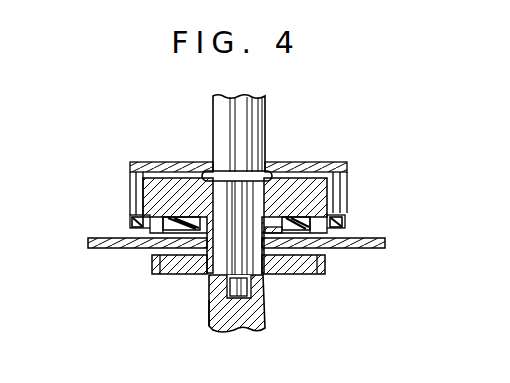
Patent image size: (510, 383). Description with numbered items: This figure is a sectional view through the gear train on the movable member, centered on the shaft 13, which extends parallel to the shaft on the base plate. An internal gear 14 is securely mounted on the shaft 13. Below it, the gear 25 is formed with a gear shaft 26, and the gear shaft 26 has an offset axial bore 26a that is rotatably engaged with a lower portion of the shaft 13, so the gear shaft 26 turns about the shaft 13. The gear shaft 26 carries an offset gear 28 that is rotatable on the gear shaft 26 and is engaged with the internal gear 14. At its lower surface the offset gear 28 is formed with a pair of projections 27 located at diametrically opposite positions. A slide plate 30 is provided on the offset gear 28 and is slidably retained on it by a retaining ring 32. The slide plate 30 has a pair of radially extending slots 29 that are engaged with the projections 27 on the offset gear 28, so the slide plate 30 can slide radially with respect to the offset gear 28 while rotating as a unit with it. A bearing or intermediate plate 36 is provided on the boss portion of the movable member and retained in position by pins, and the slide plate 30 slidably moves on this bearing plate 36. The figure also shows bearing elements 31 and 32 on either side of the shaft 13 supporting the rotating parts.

The shaft 13 is at (215, 112).
The internal gear 14 is at (141, 160).
The gear 25 is at (315, 273).
The gear shaft 26 is at (208, 282).
The offset axial bore 26a is at (212, 303).
The projections 27 is at (157, 233).
The offset gear 28 is at (328, 175).
The radially extending slots 29 is at (132, 222).
The slide plate 30 is at (345, 222).
The left bearing 31 is at (181, 234).
The retaining ring 32 is at (283, 234).
The bearing plate 36 is at (388, 243).